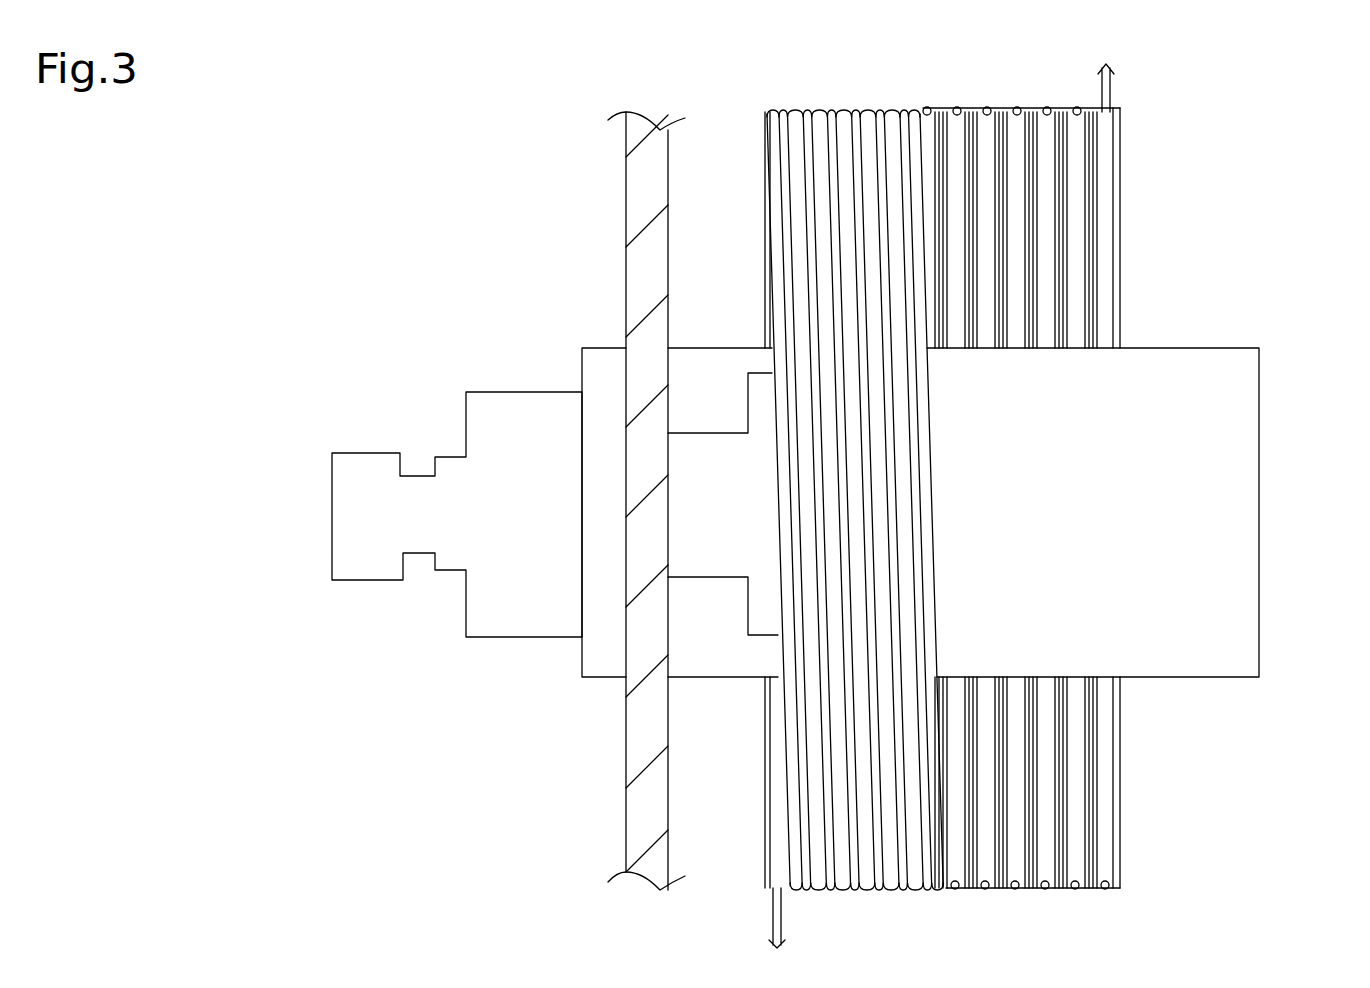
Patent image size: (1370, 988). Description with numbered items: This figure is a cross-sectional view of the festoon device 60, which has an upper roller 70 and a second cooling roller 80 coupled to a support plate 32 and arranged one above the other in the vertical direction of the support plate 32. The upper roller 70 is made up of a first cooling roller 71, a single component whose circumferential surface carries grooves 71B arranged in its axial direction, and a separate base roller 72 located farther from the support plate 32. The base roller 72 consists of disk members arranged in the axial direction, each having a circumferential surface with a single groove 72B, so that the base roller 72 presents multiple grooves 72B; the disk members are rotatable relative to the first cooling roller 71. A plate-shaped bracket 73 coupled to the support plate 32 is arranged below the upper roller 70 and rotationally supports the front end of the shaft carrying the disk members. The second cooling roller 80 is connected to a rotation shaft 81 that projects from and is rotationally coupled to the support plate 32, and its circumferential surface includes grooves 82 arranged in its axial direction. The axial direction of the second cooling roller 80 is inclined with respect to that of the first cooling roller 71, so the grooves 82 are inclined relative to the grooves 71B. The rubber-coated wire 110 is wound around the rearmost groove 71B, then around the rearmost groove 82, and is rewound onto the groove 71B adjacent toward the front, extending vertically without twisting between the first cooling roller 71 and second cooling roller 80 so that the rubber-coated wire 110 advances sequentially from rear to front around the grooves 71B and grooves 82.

The support plate 32 is at (626, 190).
The festoon device 60 is at (1298, 147).
The upper roller 70 is at (1120, 724).
The first cooling roller 71 is at (714, 543).
The grooves 71B is at (784, 907).
The base roller 72 is at (1062, 519).
The grooves 72B is at (1108, 890).
The bracket 73 is at (1261, 510).
The second cooling roller 80 is at (822, 470).
The rotation shaft 81 is at (704, 433).
The grooves 82 is at (907, 108).
The rubber-coated wire 110 is at (1116, 90).